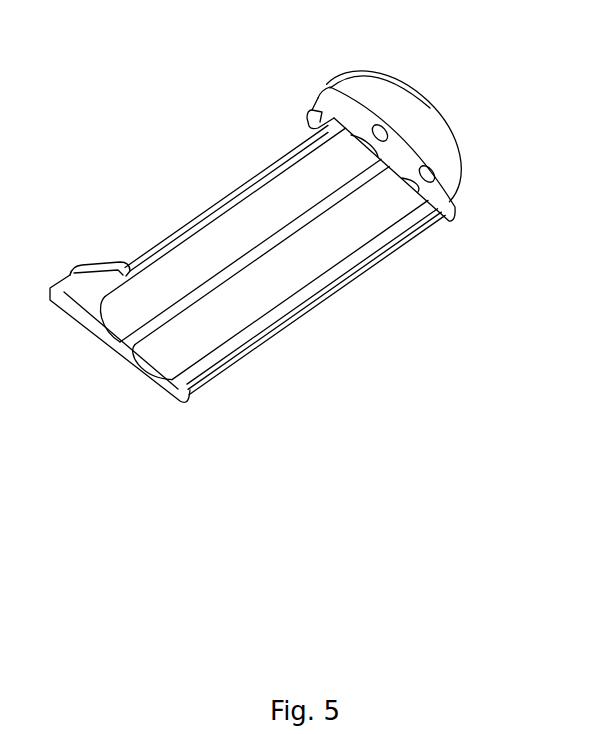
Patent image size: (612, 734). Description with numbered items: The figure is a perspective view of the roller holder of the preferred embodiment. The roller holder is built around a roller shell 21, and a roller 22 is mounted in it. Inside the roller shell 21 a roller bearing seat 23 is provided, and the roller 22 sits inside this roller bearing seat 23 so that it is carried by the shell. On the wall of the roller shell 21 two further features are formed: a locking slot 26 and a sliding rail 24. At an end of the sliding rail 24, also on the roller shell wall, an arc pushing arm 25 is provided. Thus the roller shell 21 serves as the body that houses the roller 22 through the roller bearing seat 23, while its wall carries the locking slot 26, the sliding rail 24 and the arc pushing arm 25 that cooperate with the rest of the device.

The roller shell 21 is at (430, 108).
The roller 22 is at (186, 270).
The roller bearing seat 23 is at (432, 170).
The sliding rail 24 is at (352, 128).
The arc pushing arm 25 is at (315, 100).
The locking slot 26 is at (124, 262).